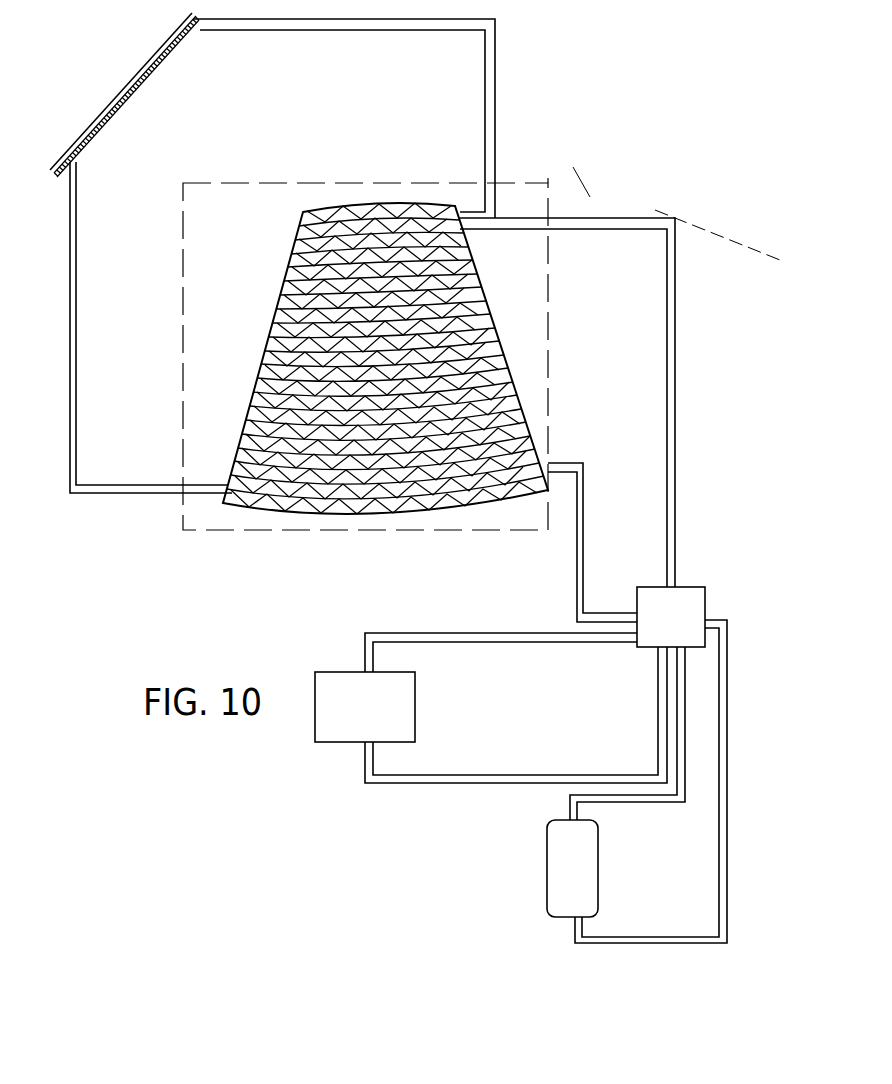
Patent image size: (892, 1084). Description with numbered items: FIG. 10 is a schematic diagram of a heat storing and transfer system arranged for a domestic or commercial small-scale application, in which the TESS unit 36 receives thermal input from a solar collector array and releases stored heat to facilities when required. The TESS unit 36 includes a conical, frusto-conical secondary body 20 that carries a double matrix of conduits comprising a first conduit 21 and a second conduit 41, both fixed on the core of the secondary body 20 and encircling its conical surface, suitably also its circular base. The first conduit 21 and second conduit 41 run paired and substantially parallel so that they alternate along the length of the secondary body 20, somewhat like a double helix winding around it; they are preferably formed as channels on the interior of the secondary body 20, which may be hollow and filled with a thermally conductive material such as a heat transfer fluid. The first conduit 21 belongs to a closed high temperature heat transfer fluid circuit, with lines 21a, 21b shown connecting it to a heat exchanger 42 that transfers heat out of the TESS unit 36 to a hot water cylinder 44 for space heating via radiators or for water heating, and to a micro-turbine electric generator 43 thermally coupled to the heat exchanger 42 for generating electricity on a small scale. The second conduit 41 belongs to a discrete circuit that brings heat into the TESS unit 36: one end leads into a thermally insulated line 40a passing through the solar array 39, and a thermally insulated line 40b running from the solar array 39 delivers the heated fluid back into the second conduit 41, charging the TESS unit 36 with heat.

The secondary body 20 is at (417, 220).
The first conduit 21 is at (270, 343).
The second conduit 41 is at (458, 217).
The tube outlet line 21a is at (553, 457).
The tube inlet line 21b is at (507, 227).
The TESS unit 36 is at (287, 183).
The solar array 39 is at (138, 92).
The thermally insulated line 40a is at (83, 282).
The thermally insulated line 40b is at (497, 103).
The heat exchanger 42 is at (671, 617).
The micro-turbine electric generator 43 is at (383, 721).
The hot water cylinder 44 is at (592, 881).